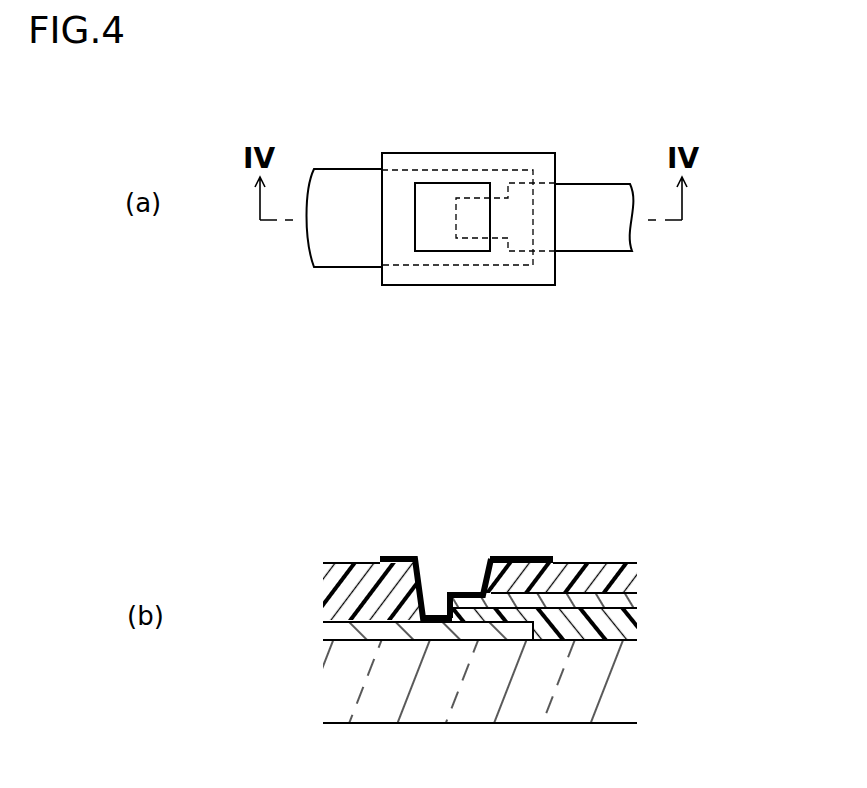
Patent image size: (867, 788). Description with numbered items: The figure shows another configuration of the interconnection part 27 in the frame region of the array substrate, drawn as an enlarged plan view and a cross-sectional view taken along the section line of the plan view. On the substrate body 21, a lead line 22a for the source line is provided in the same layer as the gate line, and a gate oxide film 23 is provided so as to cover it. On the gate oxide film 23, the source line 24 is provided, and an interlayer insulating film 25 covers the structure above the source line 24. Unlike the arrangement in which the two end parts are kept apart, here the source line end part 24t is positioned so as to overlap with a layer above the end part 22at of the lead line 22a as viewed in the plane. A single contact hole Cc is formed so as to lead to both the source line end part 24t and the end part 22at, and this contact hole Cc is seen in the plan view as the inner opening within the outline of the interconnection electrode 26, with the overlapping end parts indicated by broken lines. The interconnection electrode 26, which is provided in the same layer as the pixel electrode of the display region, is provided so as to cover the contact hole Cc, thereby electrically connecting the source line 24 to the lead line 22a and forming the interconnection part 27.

The substrate body 21 is at (335, 698).
The lead line 22a is at (342, 186).
The end part of the lead line 22at is at (505, 182).
The gate oxide film 23 is at (623, 622).
The source line 24 is at (625, 602).
The source line end part 24t is at (473, 228).
The interlayer insulating film 25 is at (337, 587).
The interconnection electrode 26 is at (537, 275).
The interconnection part 27 is at (590, 122).
The contact hole Cc is at (418, 218).